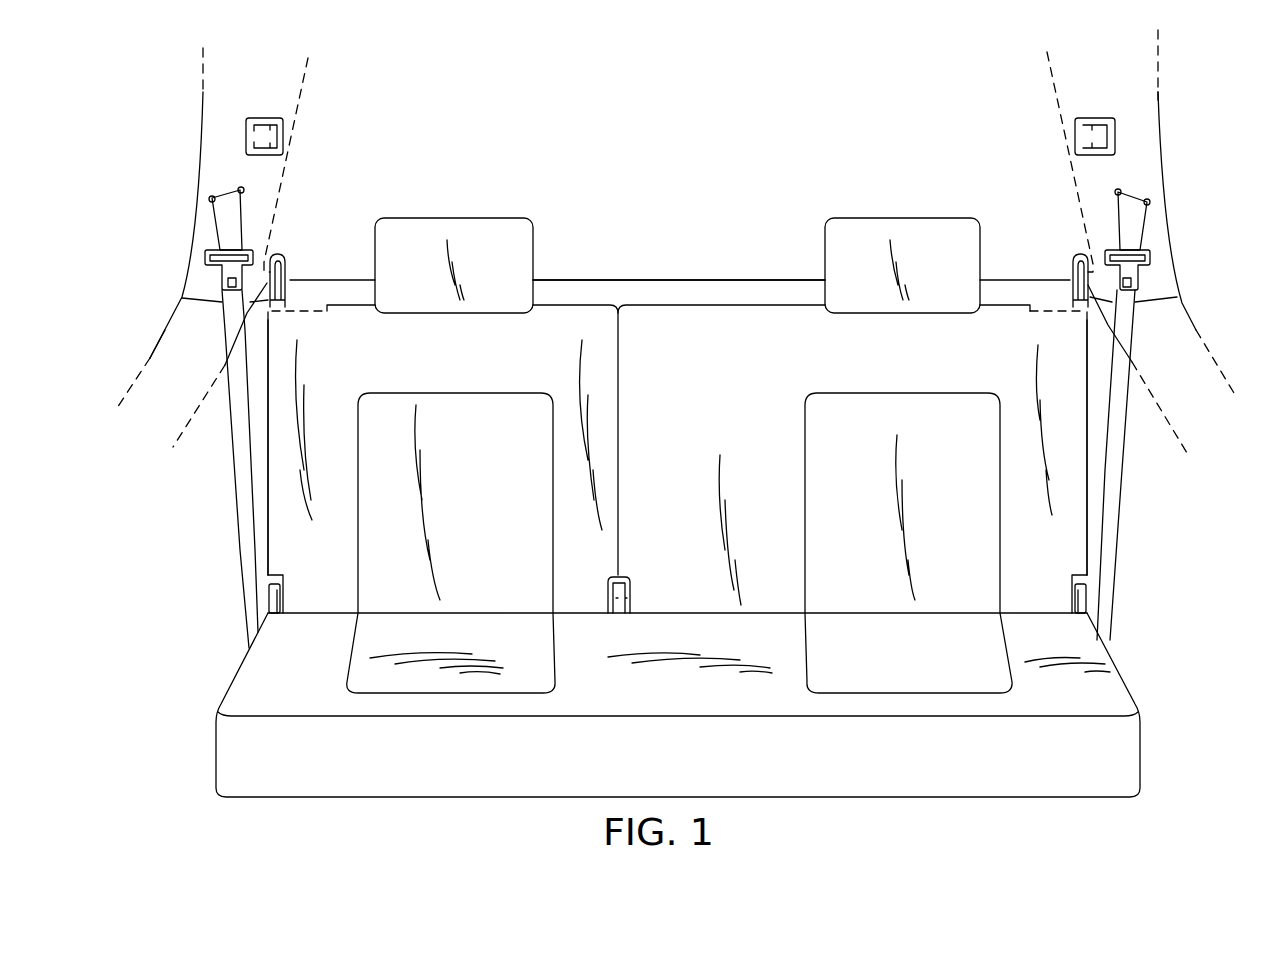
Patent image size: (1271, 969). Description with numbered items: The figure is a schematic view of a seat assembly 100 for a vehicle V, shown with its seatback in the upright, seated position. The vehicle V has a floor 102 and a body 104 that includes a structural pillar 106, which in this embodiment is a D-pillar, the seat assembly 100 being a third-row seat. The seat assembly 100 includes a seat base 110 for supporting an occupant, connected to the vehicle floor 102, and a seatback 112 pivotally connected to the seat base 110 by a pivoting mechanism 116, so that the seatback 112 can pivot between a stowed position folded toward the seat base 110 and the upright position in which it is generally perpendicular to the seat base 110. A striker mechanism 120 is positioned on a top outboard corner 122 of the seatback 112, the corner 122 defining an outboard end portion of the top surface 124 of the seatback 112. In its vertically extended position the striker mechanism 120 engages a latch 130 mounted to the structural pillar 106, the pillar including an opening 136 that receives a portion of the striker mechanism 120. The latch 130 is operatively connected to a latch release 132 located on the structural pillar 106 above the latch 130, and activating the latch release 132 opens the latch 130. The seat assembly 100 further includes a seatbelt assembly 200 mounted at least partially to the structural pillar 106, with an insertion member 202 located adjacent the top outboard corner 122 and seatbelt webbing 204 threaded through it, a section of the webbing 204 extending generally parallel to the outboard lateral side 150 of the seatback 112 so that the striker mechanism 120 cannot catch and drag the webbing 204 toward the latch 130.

The seat assembly 100 is at (672, 253).
The floor 102 is at (403, 807).
The body 104 is at (150, 358).
The structural pillar 106 is at (218, 98).
The seat base 110 is at (1100, 690).
The seatback 112 is at (728, 318).
The pivoting mechanism 116 is at (272, 592).
The striker mechanism 120 is at (302, 263).
The top outboard corner 122 is at (290, 307).
The top surface 124 is at (568, 303).
The latch 130 is at (278, 247).
The latch release 132 is at (262, 130).
The opening 136 is at (267, 283).
The outboard lateral side 150 is at (268, 413).
The seatbelt assembly 200 is at (1157, 240).
The insertion member 202 is at (210, 200).
The seatbelt webbing 204 is at (237, 390).
The vehicle V is at (1190, 127).